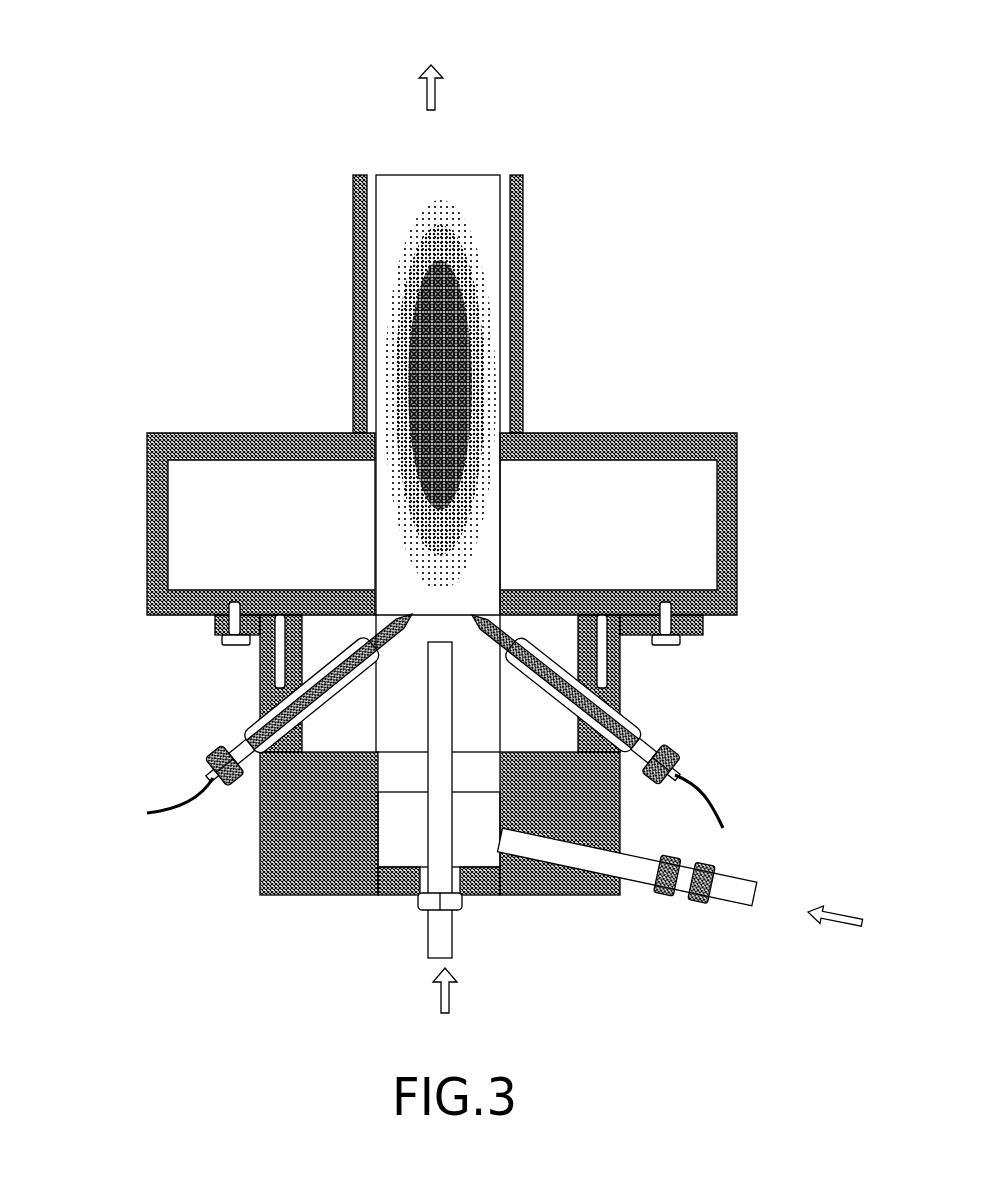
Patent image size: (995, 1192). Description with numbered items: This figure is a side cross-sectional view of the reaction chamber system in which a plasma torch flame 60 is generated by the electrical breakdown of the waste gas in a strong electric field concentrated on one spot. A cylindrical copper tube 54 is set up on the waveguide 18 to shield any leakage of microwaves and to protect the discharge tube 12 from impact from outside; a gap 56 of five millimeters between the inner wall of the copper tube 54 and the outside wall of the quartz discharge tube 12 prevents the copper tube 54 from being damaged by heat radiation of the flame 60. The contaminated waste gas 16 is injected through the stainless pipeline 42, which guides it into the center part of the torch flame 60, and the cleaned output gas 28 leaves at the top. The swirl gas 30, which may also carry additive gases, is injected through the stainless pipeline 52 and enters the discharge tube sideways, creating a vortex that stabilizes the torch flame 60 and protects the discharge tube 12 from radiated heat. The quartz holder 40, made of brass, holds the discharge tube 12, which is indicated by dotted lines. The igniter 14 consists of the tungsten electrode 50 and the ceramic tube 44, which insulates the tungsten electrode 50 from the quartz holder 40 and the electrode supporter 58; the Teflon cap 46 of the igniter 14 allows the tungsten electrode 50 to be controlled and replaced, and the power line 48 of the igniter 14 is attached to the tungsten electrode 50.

The discharge tube 12 is at (503, 368).
The igniter 14 is at (228, 727).
The contaminated waste gas 16 is at (446, 1011).
The waveguide 18 is at (690, 427).
The output gas 28 is at (429, 58).
The swirl gas 30 is at (861, 928).
The quartz holder 40 is at (322, 860).
The stainless pipeline 42 is at (447, 870).
The ceramic tube 44 is at (627, 713).
The Teflon cap 46 is at (668, 748).
The power line 48 is at (712, 797).
The tungsten electrode 50 is at (248, 720).
The stainless pipeline 52 is at (633, 858).
The cylindrical copper tube 54 is at (505, 283).
The gap 56 is at (505, 200).
The electrode supporter 58 is at (268, 802).
The plasma torch flame 60 is at (400, 385).